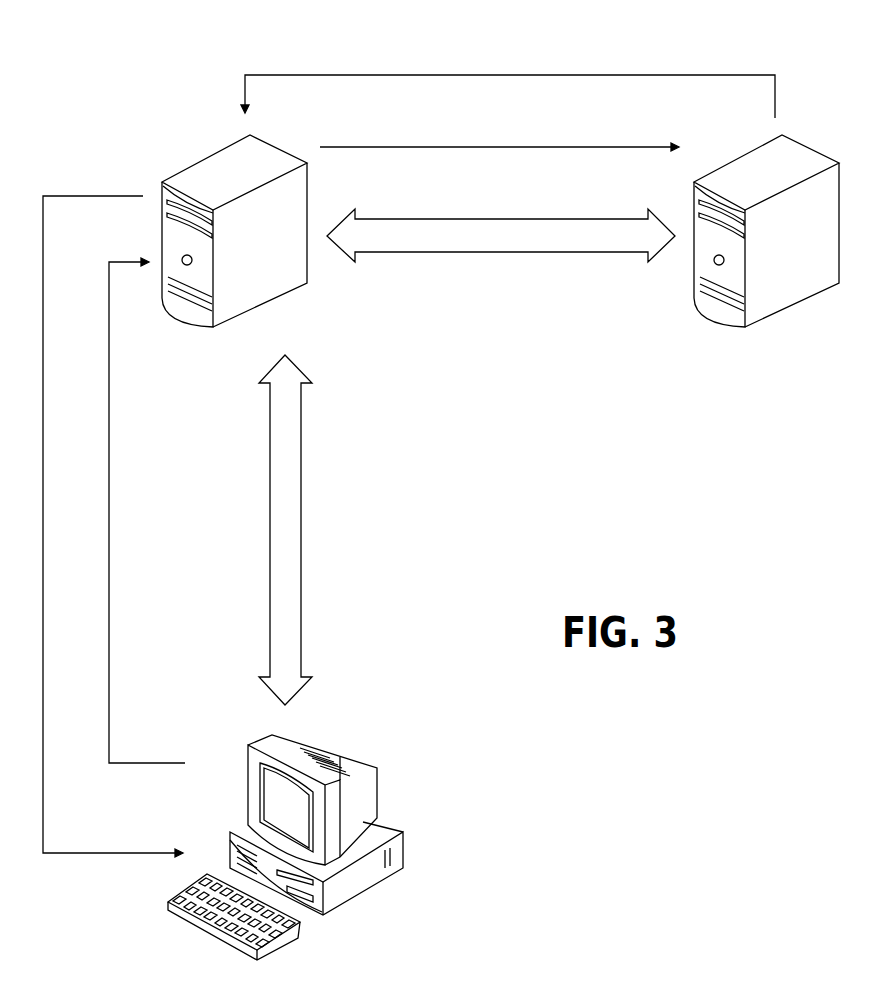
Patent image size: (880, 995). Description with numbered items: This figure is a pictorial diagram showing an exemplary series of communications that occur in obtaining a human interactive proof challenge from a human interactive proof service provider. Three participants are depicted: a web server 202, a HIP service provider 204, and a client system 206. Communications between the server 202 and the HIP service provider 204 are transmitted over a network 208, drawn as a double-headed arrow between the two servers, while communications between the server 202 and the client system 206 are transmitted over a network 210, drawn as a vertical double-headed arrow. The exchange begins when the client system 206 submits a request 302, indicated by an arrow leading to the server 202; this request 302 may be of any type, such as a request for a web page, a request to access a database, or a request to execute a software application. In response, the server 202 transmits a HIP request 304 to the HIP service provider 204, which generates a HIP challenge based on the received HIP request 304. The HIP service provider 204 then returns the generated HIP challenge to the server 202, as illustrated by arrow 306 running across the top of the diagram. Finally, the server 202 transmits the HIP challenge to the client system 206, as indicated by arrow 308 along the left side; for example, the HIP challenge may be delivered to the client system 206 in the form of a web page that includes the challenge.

The server 202 is at (225, 147).
The HIP service provider 204 is at (805, 148).
The client system 206 is at (377, 795).
The network 208 is at (427, 252).
The network 210 is at (301, 490).
The request 302 is at (109, 525).
The HIP request 304 is at (458, 147).
The arrow 306 is at (330, 75).
The arrow 308 is at (103, 853).